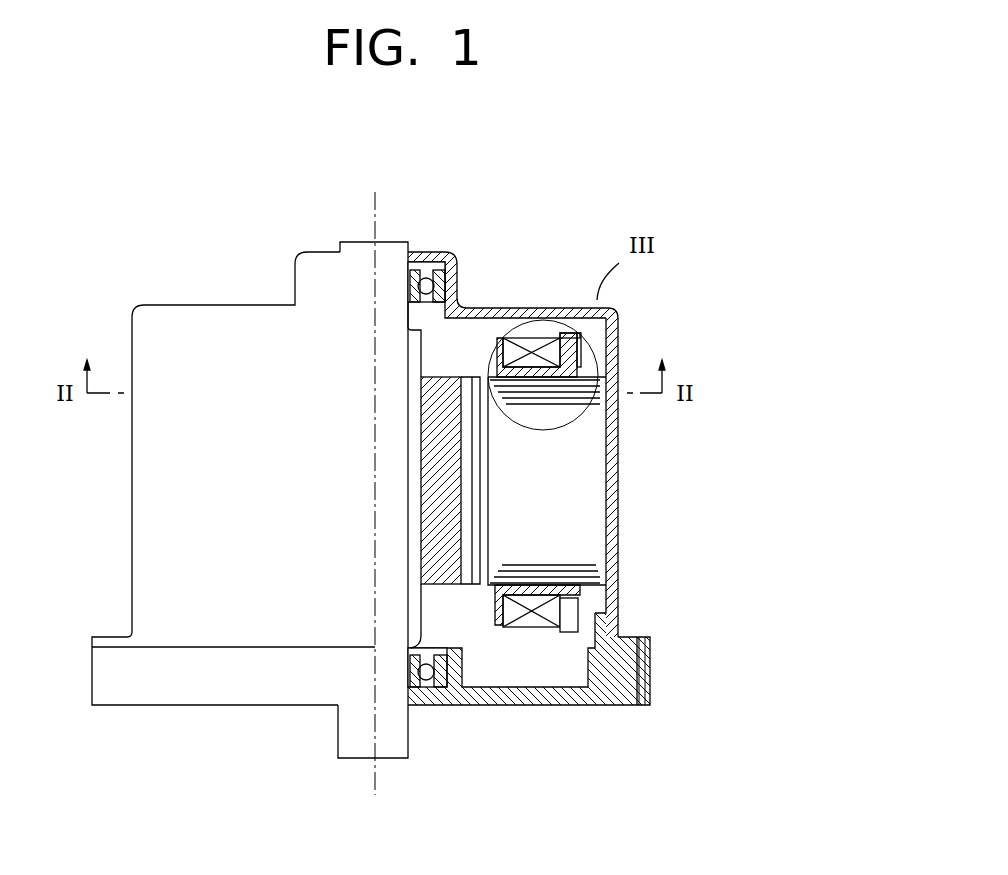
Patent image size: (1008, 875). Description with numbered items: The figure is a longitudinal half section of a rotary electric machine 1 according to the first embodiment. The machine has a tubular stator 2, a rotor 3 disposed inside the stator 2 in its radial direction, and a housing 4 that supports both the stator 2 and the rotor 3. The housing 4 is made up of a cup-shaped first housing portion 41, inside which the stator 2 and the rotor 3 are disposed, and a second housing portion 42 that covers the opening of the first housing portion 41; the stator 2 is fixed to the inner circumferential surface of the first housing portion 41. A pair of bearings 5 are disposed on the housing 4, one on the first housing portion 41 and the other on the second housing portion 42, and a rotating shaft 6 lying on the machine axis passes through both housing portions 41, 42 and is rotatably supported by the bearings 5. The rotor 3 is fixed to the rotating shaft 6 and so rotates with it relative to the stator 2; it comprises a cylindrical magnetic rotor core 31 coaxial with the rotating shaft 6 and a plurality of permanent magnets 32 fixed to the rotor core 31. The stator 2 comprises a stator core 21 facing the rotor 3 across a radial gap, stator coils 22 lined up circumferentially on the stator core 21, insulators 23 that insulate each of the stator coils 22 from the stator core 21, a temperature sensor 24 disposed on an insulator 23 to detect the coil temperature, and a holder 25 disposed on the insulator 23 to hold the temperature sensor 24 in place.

The rotary electric machine 1 is at (145, 280).
The stator 2 is at (605, 398).
The rotor 3 is at (479, 471).
The housing 4 is at (565, 443).
The bearings 5 is at (424, 252).
The rotating shaft 6 is at (384, 242).
The stator core 21 is at (585, 452).
The stator coils 22 is at (523, 345).
The insulators 23 is at (600, 378).
The temperature sensor 24 is at (570, 330).
The holder 25 is at (590, 345).
The rotor core 31 is at (440, 587).
The permanent magnets 32 is at (472, 587).
The first housing portion 41 is at (619, 500).
The second housing portion 42 is at (612, 707).